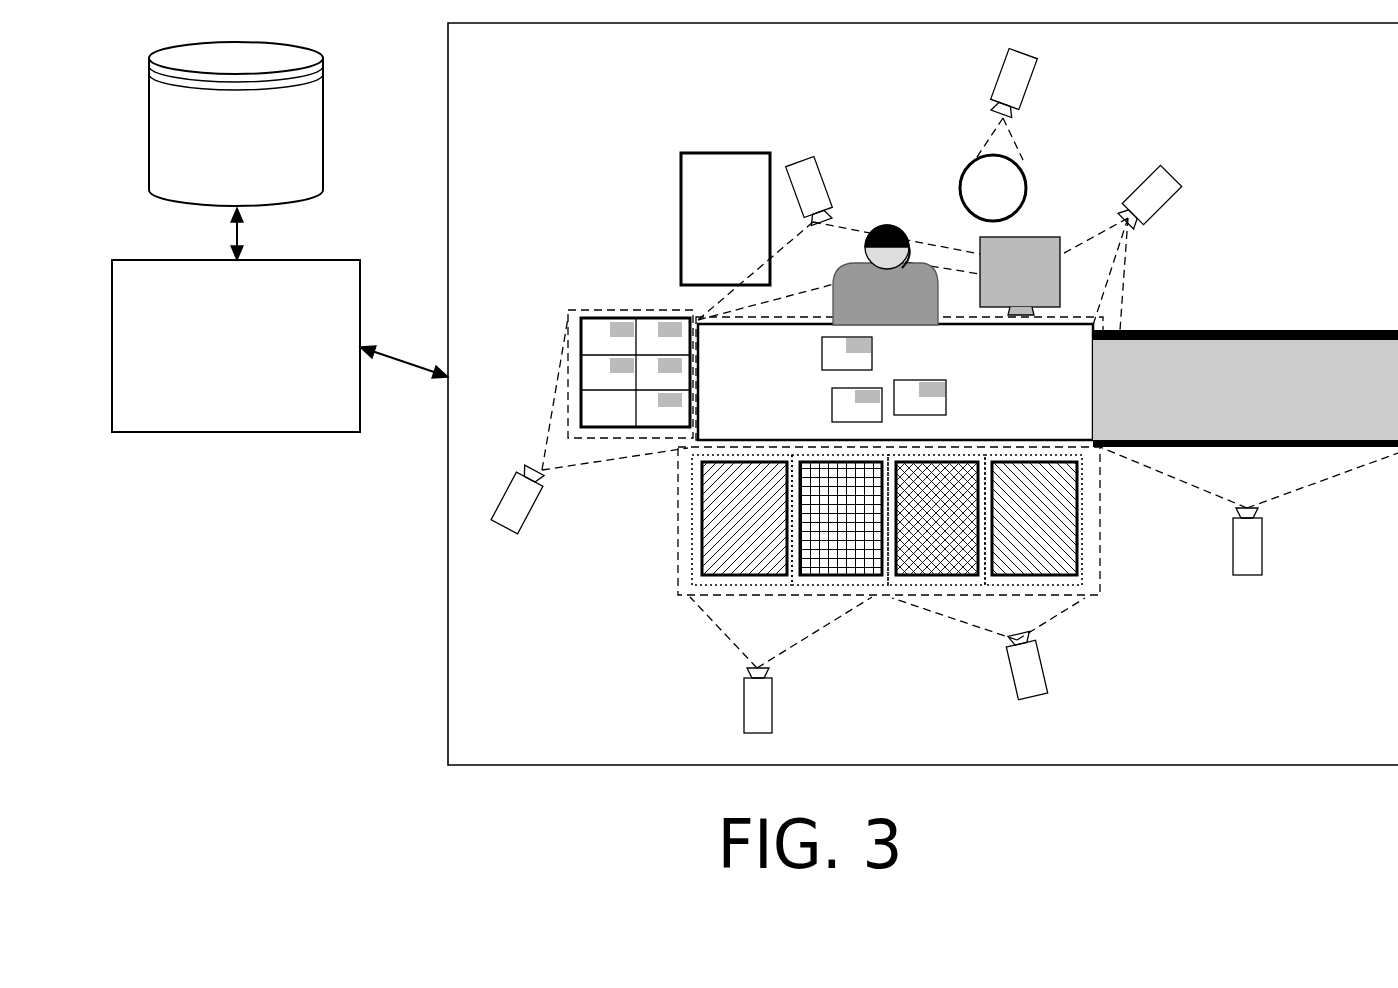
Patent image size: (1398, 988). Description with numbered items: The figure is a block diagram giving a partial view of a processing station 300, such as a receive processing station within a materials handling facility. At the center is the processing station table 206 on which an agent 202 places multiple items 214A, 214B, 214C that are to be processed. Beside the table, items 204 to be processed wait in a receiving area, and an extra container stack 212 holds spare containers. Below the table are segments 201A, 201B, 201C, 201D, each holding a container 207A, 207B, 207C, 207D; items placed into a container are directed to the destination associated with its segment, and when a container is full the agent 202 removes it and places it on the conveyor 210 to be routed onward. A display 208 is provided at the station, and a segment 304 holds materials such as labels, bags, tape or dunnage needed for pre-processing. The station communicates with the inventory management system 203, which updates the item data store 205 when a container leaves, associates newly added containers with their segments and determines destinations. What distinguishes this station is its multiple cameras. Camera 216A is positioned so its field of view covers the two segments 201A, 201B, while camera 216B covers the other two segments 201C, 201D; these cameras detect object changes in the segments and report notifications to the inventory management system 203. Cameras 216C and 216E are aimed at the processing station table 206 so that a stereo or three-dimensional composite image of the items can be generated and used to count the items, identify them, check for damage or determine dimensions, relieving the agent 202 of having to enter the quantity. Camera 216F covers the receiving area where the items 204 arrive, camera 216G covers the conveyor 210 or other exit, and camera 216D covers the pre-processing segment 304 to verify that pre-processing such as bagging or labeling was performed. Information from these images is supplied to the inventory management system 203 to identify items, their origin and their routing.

The item data store 205 is at (291, 167).
The inventory management system 203 is at (291, 369).
The items to be processed 204 is at (580, 318).
The processing station table 206 is at (698, 322).
The extra container stack 212 is at (706, 229).
The camera 216C is at (822, 163).
The camera 216D is at (1000, 70).
The segment 304 is at (1012, 160).
The camera 216E is at (1162, 165).
The agent 202 is at (887, 225).
The display 208 is at (1036, 237).
The conveyor 210 is at (1305, 347).
The item 214A is at (947, 382).
The item 214B is at (873, 349).
The item 214C is at (833, 403).
The container 207A is at (718, 531).
The container 207B is at (814, 531).
The container 207C is at (910, 531).
The container 207D is at (1007, 531).
The segment 201A is at (712, 587).
The segment 201B is at (843, 588).
The segment 201C is at (970, 588).
The segment 201D is at (1082, 588).
The camera 216F is at (522, 528).
The camera 216G is at (1262, 547).
The camera 216A is at (744, 725).
The camera 216B is at (1044, 680).
The processing station 300 is at (914, 754).